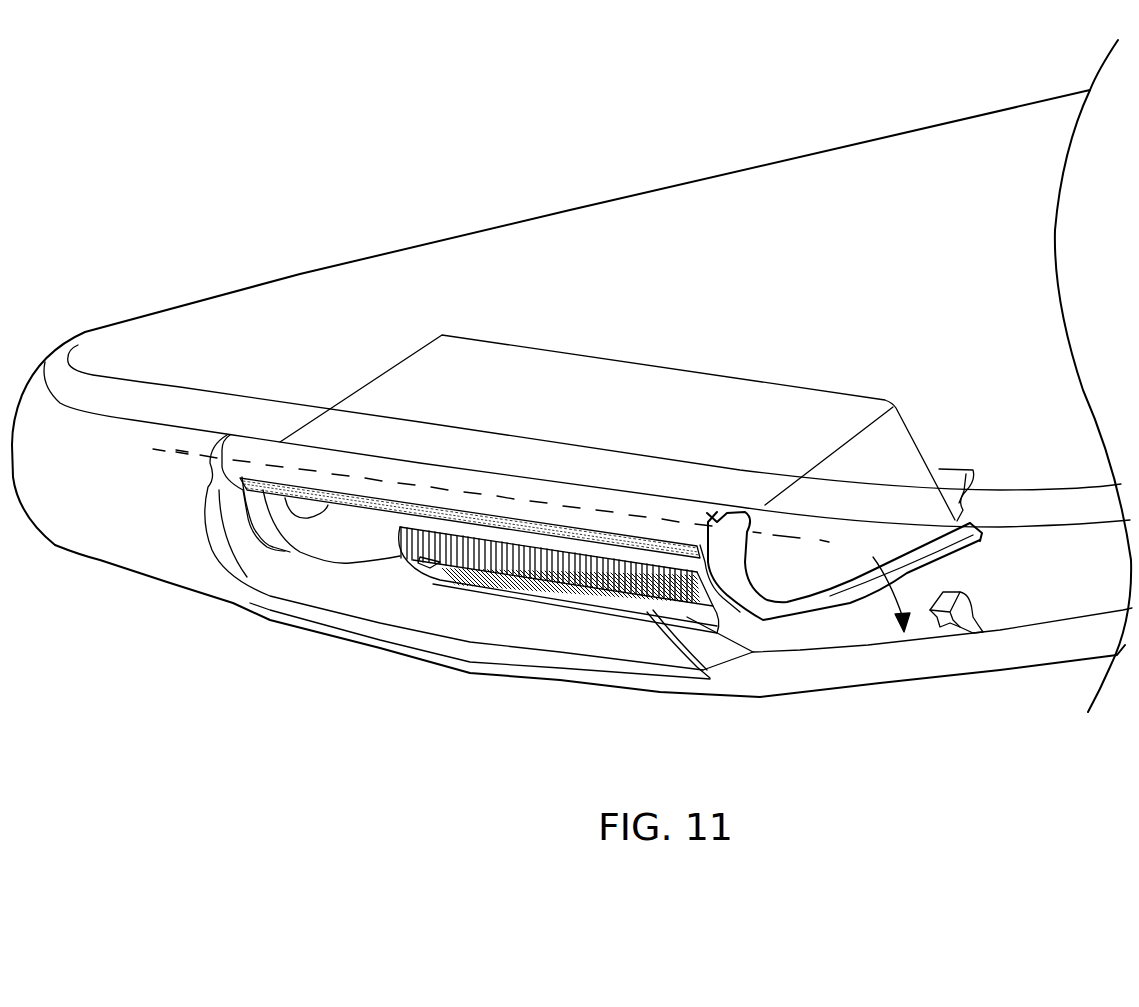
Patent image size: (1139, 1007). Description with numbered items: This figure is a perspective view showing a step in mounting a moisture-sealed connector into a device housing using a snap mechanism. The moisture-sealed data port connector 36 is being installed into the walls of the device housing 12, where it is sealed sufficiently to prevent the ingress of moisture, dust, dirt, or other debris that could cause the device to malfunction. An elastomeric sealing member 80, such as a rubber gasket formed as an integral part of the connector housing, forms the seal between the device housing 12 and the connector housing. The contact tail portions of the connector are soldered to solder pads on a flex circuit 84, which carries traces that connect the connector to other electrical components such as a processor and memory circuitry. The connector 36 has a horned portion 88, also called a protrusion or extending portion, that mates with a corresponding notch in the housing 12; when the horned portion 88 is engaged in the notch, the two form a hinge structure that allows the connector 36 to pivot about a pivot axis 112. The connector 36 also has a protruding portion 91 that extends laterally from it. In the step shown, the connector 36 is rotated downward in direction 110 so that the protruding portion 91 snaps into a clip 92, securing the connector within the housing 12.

The housing 12 is at (1068, 650).
The moisture-sealed data port connector 36 is at (471, 584).
The sealing member 80 is at (483, 515).
The flex circuit 84 is at (955, 478).
The horned portion 88 is at (240, 447).
The protruding portion 91 is at (973, 541).
The clip 92 is at (970, 625).
The direction 110 is at (897, 602).
The pivot axis 112 is at (182, 453).